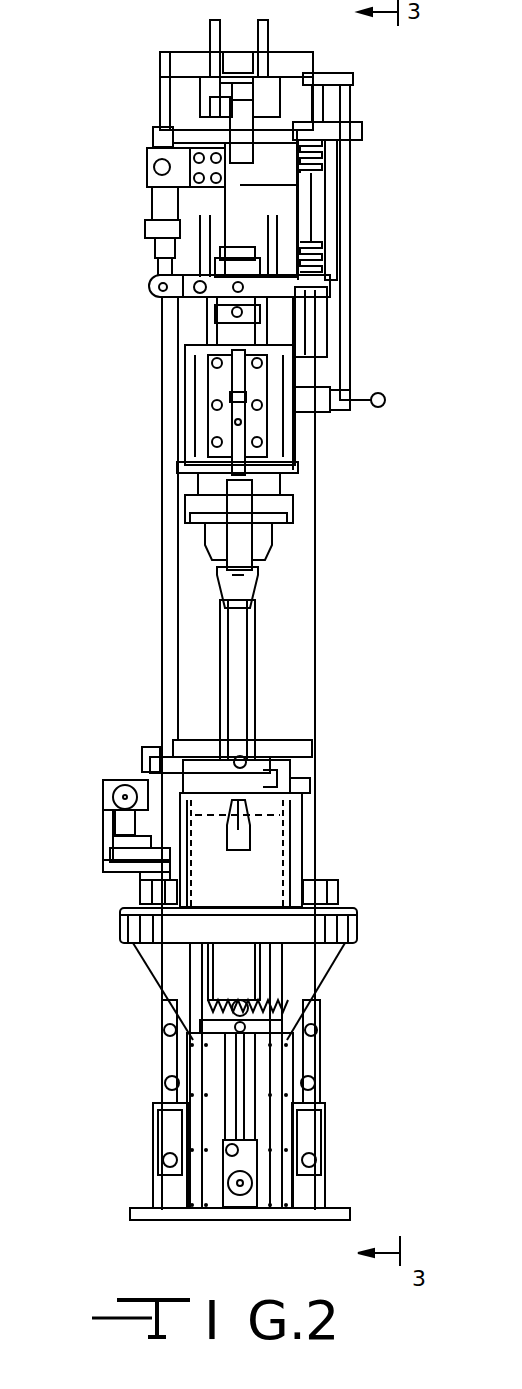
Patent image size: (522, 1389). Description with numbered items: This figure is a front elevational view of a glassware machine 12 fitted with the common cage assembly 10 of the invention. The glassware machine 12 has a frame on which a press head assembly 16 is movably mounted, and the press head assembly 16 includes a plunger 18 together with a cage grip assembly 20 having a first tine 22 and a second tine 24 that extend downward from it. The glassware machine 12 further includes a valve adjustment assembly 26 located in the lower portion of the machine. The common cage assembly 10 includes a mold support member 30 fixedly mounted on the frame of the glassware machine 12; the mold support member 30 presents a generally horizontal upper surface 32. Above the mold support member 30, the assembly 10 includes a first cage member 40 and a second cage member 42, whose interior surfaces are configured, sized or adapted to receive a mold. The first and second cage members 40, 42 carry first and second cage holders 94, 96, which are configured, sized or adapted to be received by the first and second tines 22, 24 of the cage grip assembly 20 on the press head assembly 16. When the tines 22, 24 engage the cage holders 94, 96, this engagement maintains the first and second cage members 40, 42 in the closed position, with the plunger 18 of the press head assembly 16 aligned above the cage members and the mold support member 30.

The common cage assembly 10 is at (348, 779).
The glassware machine 12 is at (315, 455).
The press head assembly 16 is at (190, 350).
The plunger 18 is at (256, 648).
The cage grip assembly 20 is at (240, 537).
The first tine 22 is at (220, 582).
The second tine 24 is at (262, 590).
The valve adjustment assembly 26 is at (300, 1013).
The mold support member 30 is at (357, 930).
The upper surface 32 is at (137, 893).
The first cage member 40 is at (100, 862).
The second cage member 42 is at (290, 845).
The first cage holder 94 is at (142, 773).
The second cage holder 96 is at (315, 812).